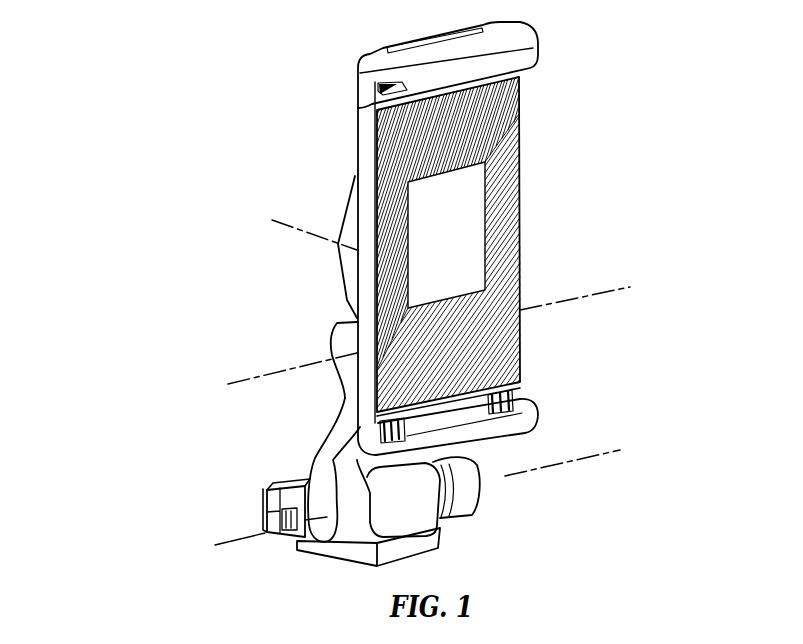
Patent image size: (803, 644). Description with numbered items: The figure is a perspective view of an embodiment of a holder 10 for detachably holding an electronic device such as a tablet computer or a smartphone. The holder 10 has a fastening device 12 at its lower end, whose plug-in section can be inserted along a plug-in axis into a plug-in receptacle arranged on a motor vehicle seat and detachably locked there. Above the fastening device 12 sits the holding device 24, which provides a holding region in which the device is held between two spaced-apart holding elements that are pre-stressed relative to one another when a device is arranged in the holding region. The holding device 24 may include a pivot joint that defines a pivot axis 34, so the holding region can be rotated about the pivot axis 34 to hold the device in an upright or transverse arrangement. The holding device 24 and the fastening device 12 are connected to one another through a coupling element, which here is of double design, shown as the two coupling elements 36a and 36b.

The holder 10 is at (164, 120).
The fastening device 12 is at (279, 546).
The holding device 24 is at (550, 204).
The pivot axis 34 is at (287, 230).
The coupling element 36a is at (314, 432).
The coupling element 36b is at (496, 463).